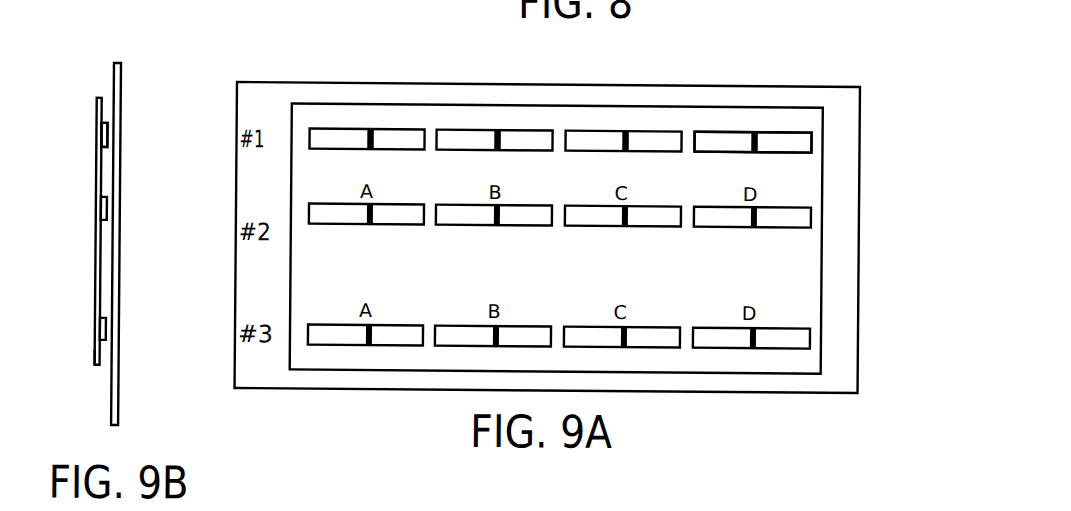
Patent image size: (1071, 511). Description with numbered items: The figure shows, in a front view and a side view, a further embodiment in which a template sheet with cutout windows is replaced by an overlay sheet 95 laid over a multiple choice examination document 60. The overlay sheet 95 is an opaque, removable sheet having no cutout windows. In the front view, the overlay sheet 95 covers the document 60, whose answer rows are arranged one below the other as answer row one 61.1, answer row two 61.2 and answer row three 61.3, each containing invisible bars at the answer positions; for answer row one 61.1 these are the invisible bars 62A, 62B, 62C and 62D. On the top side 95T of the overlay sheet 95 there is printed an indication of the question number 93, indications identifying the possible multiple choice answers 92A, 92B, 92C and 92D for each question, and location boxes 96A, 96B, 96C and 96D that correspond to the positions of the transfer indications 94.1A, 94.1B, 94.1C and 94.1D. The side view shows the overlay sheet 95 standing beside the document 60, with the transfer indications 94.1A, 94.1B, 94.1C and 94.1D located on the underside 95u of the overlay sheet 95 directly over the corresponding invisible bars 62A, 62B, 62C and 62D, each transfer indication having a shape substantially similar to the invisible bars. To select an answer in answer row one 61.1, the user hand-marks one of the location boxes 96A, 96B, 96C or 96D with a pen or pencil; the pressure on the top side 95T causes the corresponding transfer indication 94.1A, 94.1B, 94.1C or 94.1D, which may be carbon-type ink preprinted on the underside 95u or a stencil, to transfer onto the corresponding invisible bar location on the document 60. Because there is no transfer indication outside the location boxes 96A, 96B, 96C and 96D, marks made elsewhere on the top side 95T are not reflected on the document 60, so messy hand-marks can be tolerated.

In FIG. 9B, the document 60 is at (122, 78).
In FIG. 9A, the answer row one 61.1 is at (820, 132).
In FIG. 9A, the answer row two 61.2 is at (818, 211).
In FIG. 9A, the answer row three 61.3 is at (818, 334).
In FIG. 9A, the invisible bar 62A is at (372, 130).
In FIG. 9A, the invisible bar 62B is at (501, 131).
In FIG. 9A, the invisible bar 62C is at (630, 130).
In FIG. 9A, the invisible bar 62D is at (757, 130).
In FIG. 9A, the indication of possible multiple choice answer 92A is at (361, 106).
In FIG. 9A, the indication of possible multiple choice answer 92B is at (505, 107).
In FIG. 9A, the indication of possible multiple choice answer 92C is at (620, 106).
In FIG. 9A, the indication of possible multiple choice answer 92D is at (742, 106).
In FIG. 9A, the indication of the question number 93 is at (258, 124).
In FIG. 9A, the transfer indication 94.1A is at (374, 149).
In FIG. 9B, the transfer indication 94.1A is at (106, 124).
In FIG. 9A, the transfer indication 94.1B is at (502, 149).
In FIG. 9A, the transfer indication 94.1C is at (630, 149).
In FIG. 9A, the transfer indication 94.1D is at (759, 149).
In FIG. 9A, the overlay sheet 95 is at (328, 370).
In FIG. 9B, the overlay sheet 95 is at (97, 180).
In FIG. 9B, the top side of overlay sheet 95T is at (90, 345).
In FIG. 9B, the underside of overlay sheet 95u is at (107, 370).
In FIG. 9A, the location box 96A is at (368, 149).
In FIG. 9B, the location box 96A is at (92, 135).
In FIG. 9A, the location box 96B is at (504, 160).
In FIG. 9A, the location box 96C is at (629, 160).
In FIG. 9A, the location box 96D is at (759, 160).